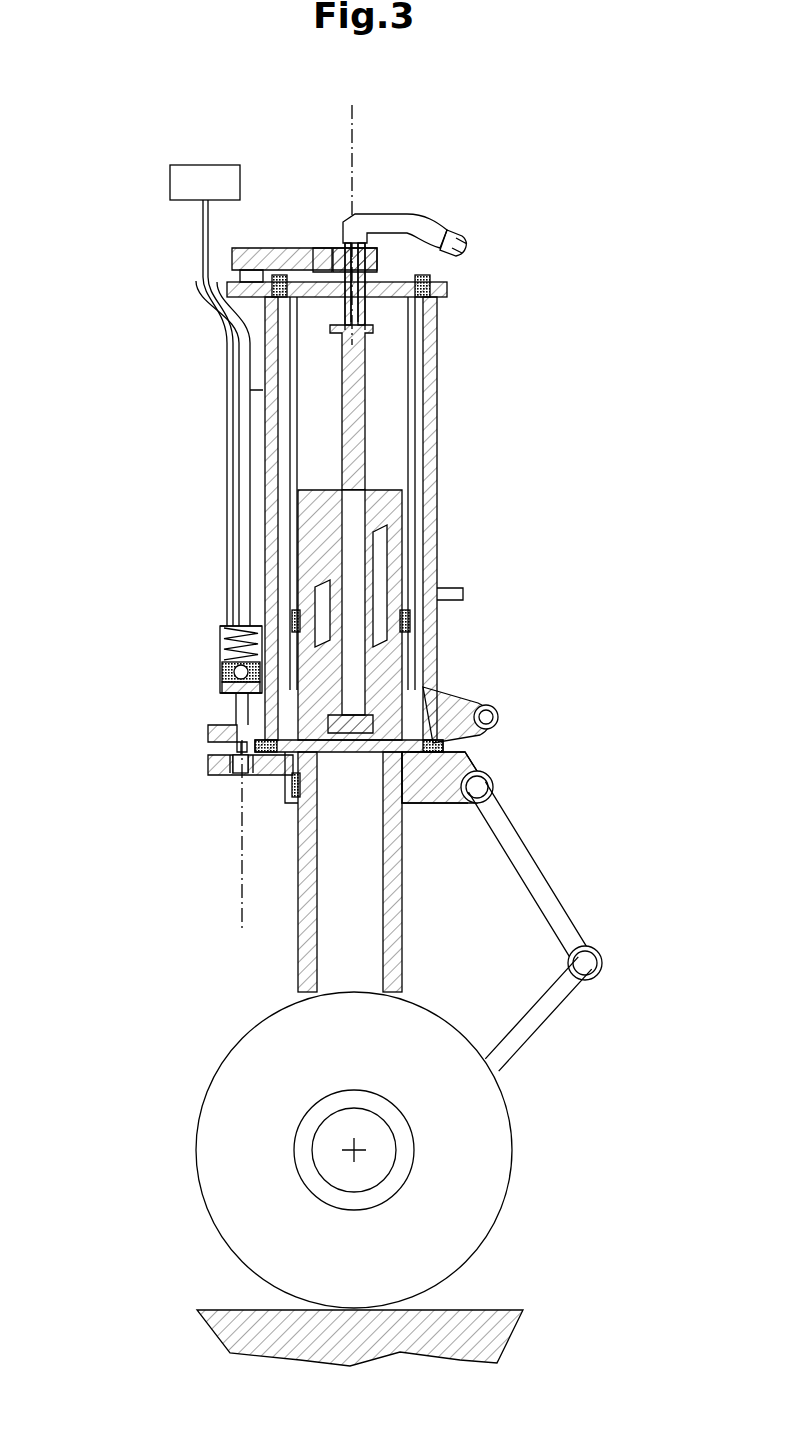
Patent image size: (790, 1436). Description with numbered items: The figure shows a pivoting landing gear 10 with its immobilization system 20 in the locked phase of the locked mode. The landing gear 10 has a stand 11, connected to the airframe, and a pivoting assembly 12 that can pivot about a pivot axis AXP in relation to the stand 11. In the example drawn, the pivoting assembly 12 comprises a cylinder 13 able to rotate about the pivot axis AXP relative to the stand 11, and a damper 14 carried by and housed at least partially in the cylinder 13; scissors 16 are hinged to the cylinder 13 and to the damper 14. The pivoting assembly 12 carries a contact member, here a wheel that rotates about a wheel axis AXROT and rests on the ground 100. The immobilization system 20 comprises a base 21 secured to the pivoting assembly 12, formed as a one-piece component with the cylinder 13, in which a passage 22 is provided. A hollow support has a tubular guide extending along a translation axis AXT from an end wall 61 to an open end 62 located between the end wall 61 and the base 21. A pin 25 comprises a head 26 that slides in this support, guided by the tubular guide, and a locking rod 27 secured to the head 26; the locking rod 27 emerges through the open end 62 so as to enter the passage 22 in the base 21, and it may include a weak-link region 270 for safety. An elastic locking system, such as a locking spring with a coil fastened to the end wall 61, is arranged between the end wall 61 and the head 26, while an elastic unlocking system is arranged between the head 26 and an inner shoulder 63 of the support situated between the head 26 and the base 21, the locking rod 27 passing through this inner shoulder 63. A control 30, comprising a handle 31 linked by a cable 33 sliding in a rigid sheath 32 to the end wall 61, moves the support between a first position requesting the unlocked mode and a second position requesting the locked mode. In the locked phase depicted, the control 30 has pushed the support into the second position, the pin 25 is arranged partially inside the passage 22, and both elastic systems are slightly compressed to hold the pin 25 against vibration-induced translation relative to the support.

The pivoting landing gear 10 is at (495, 362).
The stand 11 is at (430, 413).
The pivoting assembly 12 is at (578, 852).
The cylinder 13 is at (412, 660).
The damper 14 is at (402, 872).
The scissors 16 is at (563, 1007).
The immobilization system 20 is at (150, 655).
The base 21 is at (210, 768).
The passage 22 is at (238, 775).
The pin 25 is at (247, 773).
The head 26 is at (220, 665).
The locking rod 27 is at (247, 710).
The weak-link region 270 is at (237, 748).
The control 30 is at (165, 180).
The handle 31 is at (230, 183).
The rigid sheath 32 is at (195, 285).
The cable 33 is at (202, 220).
The end wall 61 is at (256, 626).
The open end 62 is at (208, 716).
The inner shoulder 63 is at (223, 700).
The ground 100 is at (220, 1308).
The pivot axis AXP is at (353, 168).
The translation axis AXT is at (242, 917).
The wheel axis AXROT is at (354, 1150).